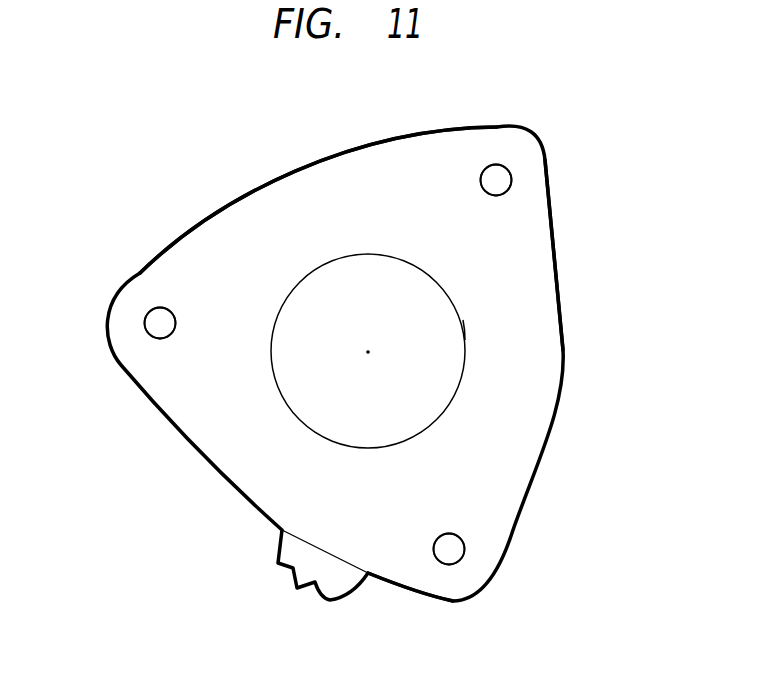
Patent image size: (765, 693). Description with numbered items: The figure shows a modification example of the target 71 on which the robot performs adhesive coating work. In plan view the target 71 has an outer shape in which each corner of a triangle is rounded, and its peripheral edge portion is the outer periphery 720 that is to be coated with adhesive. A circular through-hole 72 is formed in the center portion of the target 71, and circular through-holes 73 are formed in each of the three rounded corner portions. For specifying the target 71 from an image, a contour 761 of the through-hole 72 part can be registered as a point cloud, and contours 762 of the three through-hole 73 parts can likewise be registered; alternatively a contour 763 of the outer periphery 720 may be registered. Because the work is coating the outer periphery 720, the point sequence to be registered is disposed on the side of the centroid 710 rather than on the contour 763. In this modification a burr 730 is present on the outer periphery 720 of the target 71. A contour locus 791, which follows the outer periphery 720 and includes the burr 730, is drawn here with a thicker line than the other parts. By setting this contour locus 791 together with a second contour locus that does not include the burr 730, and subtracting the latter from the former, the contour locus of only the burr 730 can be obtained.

The target 71 is at (604, 199).
The through-hole 72 is at (465, 368).
The through-holes 73 is at (155, 306).
The centroid 710 is at (365, 353).
The outer periphery 720 is at (217, 243).
The burr 730 is at (337, 578).
The contour 761 is at (463, 322).
The contours 762 is at (145, 321).
The contour 763 is at (558, 262).
The contour locus 791 is at (427, 597).